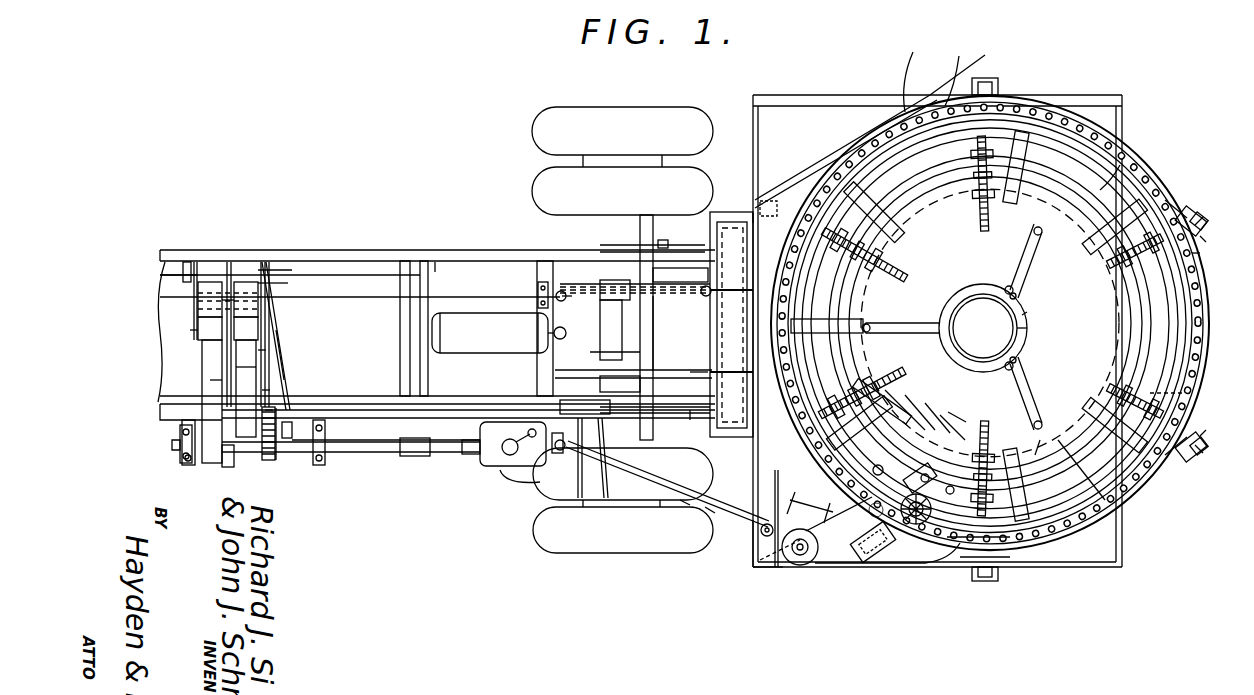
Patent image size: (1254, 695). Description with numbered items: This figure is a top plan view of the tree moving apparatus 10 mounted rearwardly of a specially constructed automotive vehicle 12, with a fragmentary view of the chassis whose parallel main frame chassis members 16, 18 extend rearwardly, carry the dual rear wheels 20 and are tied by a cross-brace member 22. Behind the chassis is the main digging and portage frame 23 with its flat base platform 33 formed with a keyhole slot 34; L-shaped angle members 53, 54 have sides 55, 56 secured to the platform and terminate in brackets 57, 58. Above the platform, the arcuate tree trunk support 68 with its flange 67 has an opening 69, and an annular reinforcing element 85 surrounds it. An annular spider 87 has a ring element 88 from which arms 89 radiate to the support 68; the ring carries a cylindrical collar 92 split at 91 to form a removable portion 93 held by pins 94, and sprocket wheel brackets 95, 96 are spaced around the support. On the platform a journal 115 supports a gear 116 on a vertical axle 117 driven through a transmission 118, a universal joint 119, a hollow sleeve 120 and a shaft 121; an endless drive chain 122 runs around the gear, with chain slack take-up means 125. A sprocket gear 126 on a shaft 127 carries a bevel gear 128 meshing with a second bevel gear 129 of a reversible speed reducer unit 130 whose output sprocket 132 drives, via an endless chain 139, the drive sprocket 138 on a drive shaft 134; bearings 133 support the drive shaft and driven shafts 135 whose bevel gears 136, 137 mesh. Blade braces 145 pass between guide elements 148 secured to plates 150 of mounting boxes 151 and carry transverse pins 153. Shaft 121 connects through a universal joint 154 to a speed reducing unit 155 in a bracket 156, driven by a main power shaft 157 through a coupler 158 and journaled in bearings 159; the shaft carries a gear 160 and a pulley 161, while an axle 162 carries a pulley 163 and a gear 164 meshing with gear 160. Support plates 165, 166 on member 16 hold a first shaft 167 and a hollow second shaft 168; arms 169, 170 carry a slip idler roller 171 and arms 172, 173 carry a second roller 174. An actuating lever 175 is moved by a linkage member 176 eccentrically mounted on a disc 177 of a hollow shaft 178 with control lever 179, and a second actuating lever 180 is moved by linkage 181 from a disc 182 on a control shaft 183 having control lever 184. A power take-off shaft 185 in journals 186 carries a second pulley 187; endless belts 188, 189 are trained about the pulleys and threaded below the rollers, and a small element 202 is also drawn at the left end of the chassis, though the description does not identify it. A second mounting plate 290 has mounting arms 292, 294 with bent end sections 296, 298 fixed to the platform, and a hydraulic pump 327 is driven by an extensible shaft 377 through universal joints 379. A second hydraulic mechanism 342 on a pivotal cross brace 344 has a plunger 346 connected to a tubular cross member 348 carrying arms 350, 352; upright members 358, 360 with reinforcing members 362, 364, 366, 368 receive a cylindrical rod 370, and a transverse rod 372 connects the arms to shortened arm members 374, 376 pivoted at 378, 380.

The tree moving apparatus 10 is at (738, 584).
The automotive vehicle 12 is at (385, 240).
The main frame chassis member 16 is at (335, 250).
The main frame chassis member 18 is at (345, 410).
The dual rear wheels 20 is at (659, 102).
The main cross-brace member 22 is at (559, 395).
The main digging and portage frame 23 is at (1140, 155).
The base platform 33 is at (812, 102).
The keyhole slot 34 is at (1188, 393).
The L-shaped angle member 53 is at (866, 96).
The L-shaped angle member 54 is at (770, 568).
The side of angle member 55 is at (790, 92).
The side of angle member 56 is at (1080, 568).
The bracket 57 is at (1120, 95).
The bracket 58 is at (1125, 545).
The flange 67 is at (1043, 449).
The arcuate tree trunk support 68 is at (952, 414).
The opening 69 is at (1085, 284).
The annular reinforcing element 85 is at (1060, 455).
The annular spider 87 is at (966, 282).
The ring element 88 is at (982, 290).
The arms 89 is at (1024, 272).
The split 91 is at (1017, 294).
The cylindrical collar 92 is at (1027, 326).
The removable portion 93 is at (1024, 313).
The pins 94 is at (1012, 287).
The sprocket wheel bracket 95 is at (966, 222).
The sprocket wheel bracket 96 is at (984, 222).
The journal 115 is at (780, 516).
The gear 116 is at (760, 561).
The vertical axle 117 is at (800, 555).
The gear box transmission 118 is at (810, 567).
The universal joint 119 is at (760, 532).
The hollow rectangular sleeve 120 is at (710, 508).
The shaft 121 is at (690, 504).
The endless drive chain 122 is at (826, 570).
The chain slack take-up means 125 is at (875, 562).
The sprocket gear 126 is at (926, 530).
The shaft 127 is at (953, 477).
The bevel gear 128 is at (950, 493).
The second bevel gear 129 is at (934, 478).
The reversible speed reducer unit 130 is at (955, 434).
The sprocket 132 is at (939, 424).
The bearings 133 is at (1120, 160).
The drive shaft 134 is at (860, 433).
The driven shafts 135 is at (1062, 178).
The bevel gears 136 is at (845, 150).
The bevel gears 137 is at (904, 178).
The drive sprocket 138 is at (907, 402).
The endless chain 139 is at (925, 415).
The blade braces 145 is at (1197, 208).
The guide element 148 is at (1182, 200).
The plates 150 is at (1170, 210).
The mounting boxes 151 is at (1202, 214).
The transverse pins 153 is at (1207, 226).
The universal joint 154 is at (555, 456).
The speed reducing unit 155 is at (490, 454).
The bracket 156 is at (462, 444).
The main power shaft 157 is at (380, 456).
The coupler 158 is at (430, 450).
The bearing 159 is at (195, 463).
The gear 160 is at (265, 450).
The pulley 161 is at (228, 453).
The axle 162 is at (225, 418).
The pulley 163 is at (262, 392).
The gear 164 is at (265, 410).
The support plate 165 is at (183, 270).
The support plate 166 is at (290, 272).
The first shaft 167 is at (205, 262).
The hollow rotatable second shaft 168 is at (245, 270).
The arm 169 is at (195, 290).
The arm 170 is at (205, 352).
The slip idler roller 171 is at (200, 325).
The arm 172 is at (238, 282).
The arm 173 is at (288, 284).
The second slip idler roller 174 is at (262, 350).
The actuating lever 175 is at (292, 270).
The linkage member 176 is at (283, 332).
The disc 177 is at (298, 430).
The hollow cylindrical shaft 178 is at (365, 425).
The control lever 179 is at (575, 475).
The second actuating lever 180 is at (275, 285).
The linkage member 181 is at (285, 365).
The disc 182 is at (288, 457).
The control shaft 183 is at (590, 406).
The control lever 184 is at (610, 455).
The power take-off shaft 185 is at (480, 295).
The journals 186 is at (538, 283).
The second pulley 187 is at (255, 302).
The endless belt 188 is at (212, 380).
The endless belt 189 is at (250, 367).
The bracket 202 is at (183, 430).
The second mounting plate 290 is at (753, 213).
The mounting arm 292 is at (775, 477).
The mounting arm 294 is at (912, 64).
The bent end section 296 is at (970, 578).
The bent end section 298 is at (953, 71).
The hydraulic pump 327 is at (700, 300).
The second hydraulic mechanism 342 is at (477, 359).
The pivotal cross brace 344 is at (435, 390).
The extensible plunger 346 is at (561, 337).
The hollow tubular cross member 348 is at (602, 352).
The arm 350 is at (660, 377).
The arm 352 is at (610, 282).
The upright structural member 358 is at (654, 252).
The upright structural member 360 is at (665, 415).
The reinforcing structural member 362 is at (452, 262).
The reinforcing structural member 364 is at (480, 398).
The second reinforcing structural member 366 is at (690, 258).
The second reinforcing structural member 368 is at (705, 420).
The cylindrical rod 370 is at (640, 328).
The transverse rod 372 is at (670, 308).
The shortened arm member 374 is at (695, 370).
The shortened arm member 376 is at (700, 282).
The extensible shaft 377 is at (579, 290).
The pivotal connection 378 is at (700, 372).
The universal joints 379 is at (545, 300).
The pivotal connection 380 is at (735, 230).